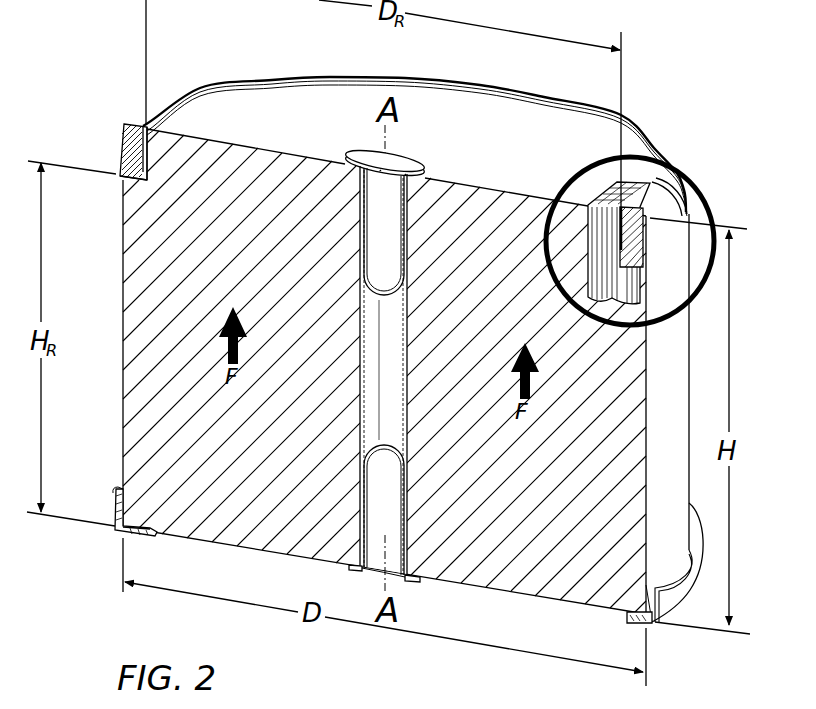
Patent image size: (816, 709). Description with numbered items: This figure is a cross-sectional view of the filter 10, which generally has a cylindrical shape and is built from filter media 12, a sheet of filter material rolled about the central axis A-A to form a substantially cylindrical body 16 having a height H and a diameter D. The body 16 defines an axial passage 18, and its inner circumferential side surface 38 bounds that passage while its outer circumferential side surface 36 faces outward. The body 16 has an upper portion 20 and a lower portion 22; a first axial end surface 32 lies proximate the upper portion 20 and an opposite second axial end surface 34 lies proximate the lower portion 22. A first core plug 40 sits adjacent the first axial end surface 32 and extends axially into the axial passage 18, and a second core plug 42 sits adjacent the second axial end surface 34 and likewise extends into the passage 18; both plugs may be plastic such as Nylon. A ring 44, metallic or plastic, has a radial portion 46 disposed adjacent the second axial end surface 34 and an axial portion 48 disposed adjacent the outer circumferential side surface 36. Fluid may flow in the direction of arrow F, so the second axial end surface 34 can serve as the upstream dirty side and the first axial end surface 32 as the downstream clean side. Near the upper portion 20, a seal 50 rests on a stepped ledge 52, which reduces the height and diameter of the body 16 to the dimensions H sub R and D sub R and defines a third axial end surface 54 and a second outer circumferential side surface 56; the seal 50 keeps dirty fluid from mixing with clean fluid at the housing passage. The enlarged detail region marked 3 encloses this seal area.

The filter 10 is at (690, 55).
The filter media 12 is at (152, 353).
The substantially cylindrical body 16 is at (676, 378).
The axial passage 18 is at (394, 354).
The upper portion 20 is at (110, 144).
The lower portion 22 is at (110, 505).
The first axial end surface 32 is at (347, 95).
The second axial end surface 34 is at (204, 544).
The outer circumferential side surface 36 is at (123, 276).
The inner circumferential side surface 38 is at (399, 392).
The first core plug 40 is at (355, 240).
The second core plug 42 is at (404, 492).
The ring 44 is at (115, 539).
The radial portion 46 is at (631, 621).
The axial portion 48 is at (672, 591).
The seal 50 is at (676, 210).
The stepped ledge 52 is at (149, 188).
The third axial end surface 54 is at (127, 181).
The second outer circumferential side surface 56 is at (587, 203).
The detail circle FIG. 3 is at (704, 192).